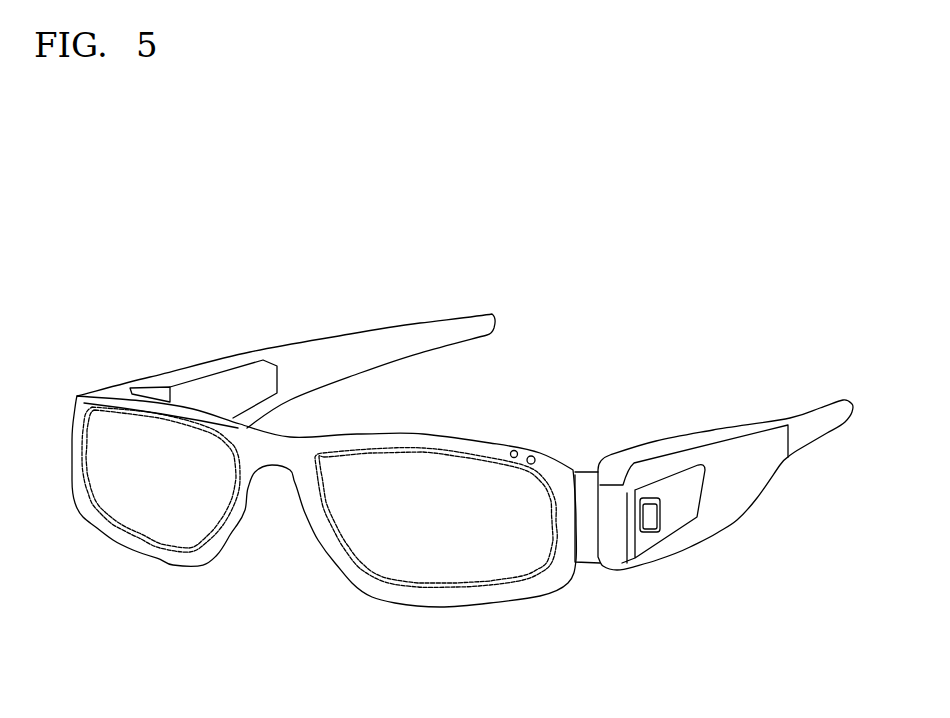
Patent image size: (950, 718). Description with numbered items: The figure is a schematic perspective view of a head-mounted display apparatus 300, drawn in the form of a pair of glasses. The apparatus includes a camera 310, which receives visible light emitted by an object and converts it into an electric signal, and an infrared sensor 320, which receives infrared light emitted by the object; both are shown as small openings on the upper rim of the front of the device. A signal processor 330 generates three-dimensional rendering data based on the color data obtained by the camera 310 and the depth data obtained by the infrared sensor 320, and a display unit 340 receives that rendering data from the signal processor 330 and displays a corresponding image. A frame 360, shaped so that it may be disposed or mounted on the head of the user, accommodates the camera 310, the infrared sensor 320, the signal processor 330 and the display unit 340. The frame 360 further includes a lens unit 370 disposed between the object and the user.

The head-mounted display apparatus 300 is at (714, 315).
The camera 310 is at (514, 447).
The infrared sensor 320 is at (534, 457).
The signal processor 330 is at (218, 403).
The display unit 340 is at (160, 394).
The frame 360 is at (730, 518).
The lens unit 370 is at (445, 570).